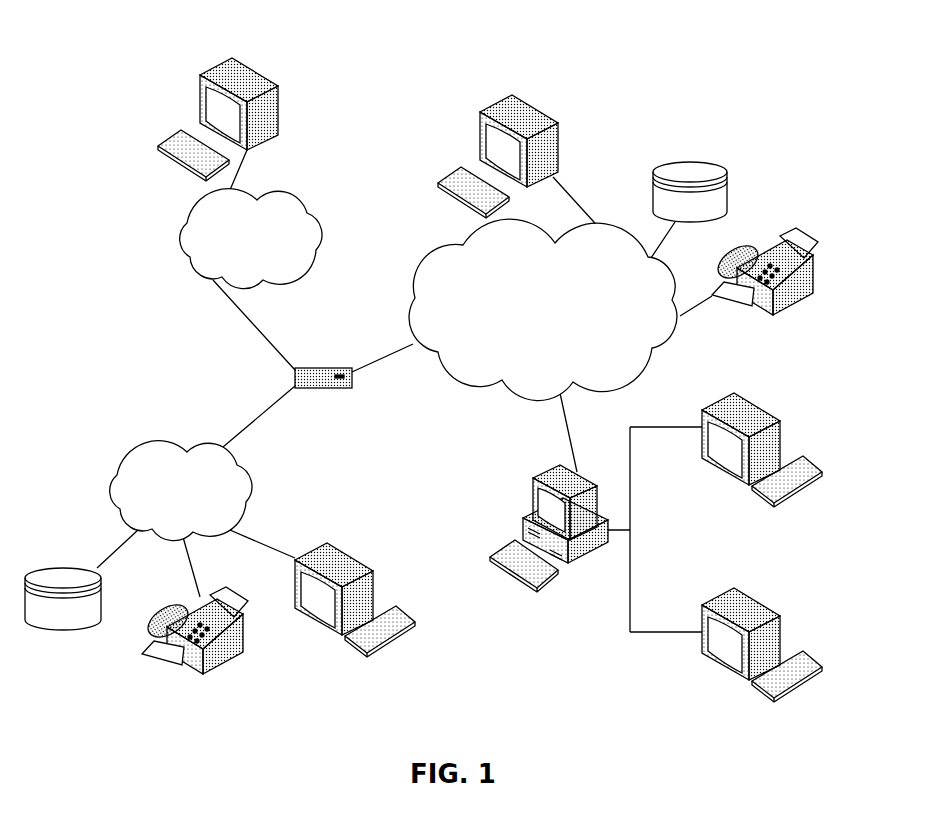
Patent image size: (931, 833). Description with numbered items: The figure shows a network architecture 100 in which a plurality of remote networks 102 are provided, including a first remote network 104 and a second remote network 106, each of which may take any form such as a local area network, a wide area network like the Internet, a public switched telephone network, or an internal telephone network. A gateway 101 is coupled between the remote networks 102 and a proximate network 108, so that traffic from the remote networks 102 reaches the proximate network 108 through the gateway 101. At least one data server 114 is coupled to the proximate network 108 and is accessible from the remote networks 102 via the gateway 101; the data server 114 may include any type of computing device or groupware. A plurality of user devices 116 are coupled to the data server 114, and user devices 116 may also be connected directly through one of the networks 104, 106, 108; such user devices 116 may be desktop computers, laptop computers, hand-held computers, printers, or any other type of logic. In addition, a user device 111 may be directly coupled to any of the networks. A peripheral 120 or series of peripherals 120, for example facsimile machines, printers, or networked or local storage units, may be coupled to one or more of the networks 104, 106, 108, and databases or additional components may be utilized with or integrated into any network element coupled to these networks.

The architecture 100 is at (140, 42).
The gateway 101 is at (305, 367).
The remote networks 102 is at (164, 302).
The first remote network 104 is at (116, 469).
The second remote network 106 is at (321, 216).
The proximate network 108 is at (641, 370).
The user device 111 is at (558, 125).
The data server 114 is at (533, 487).
The user devices 116 is at (278, 93).
The peripheral 120 is at (728, 171).